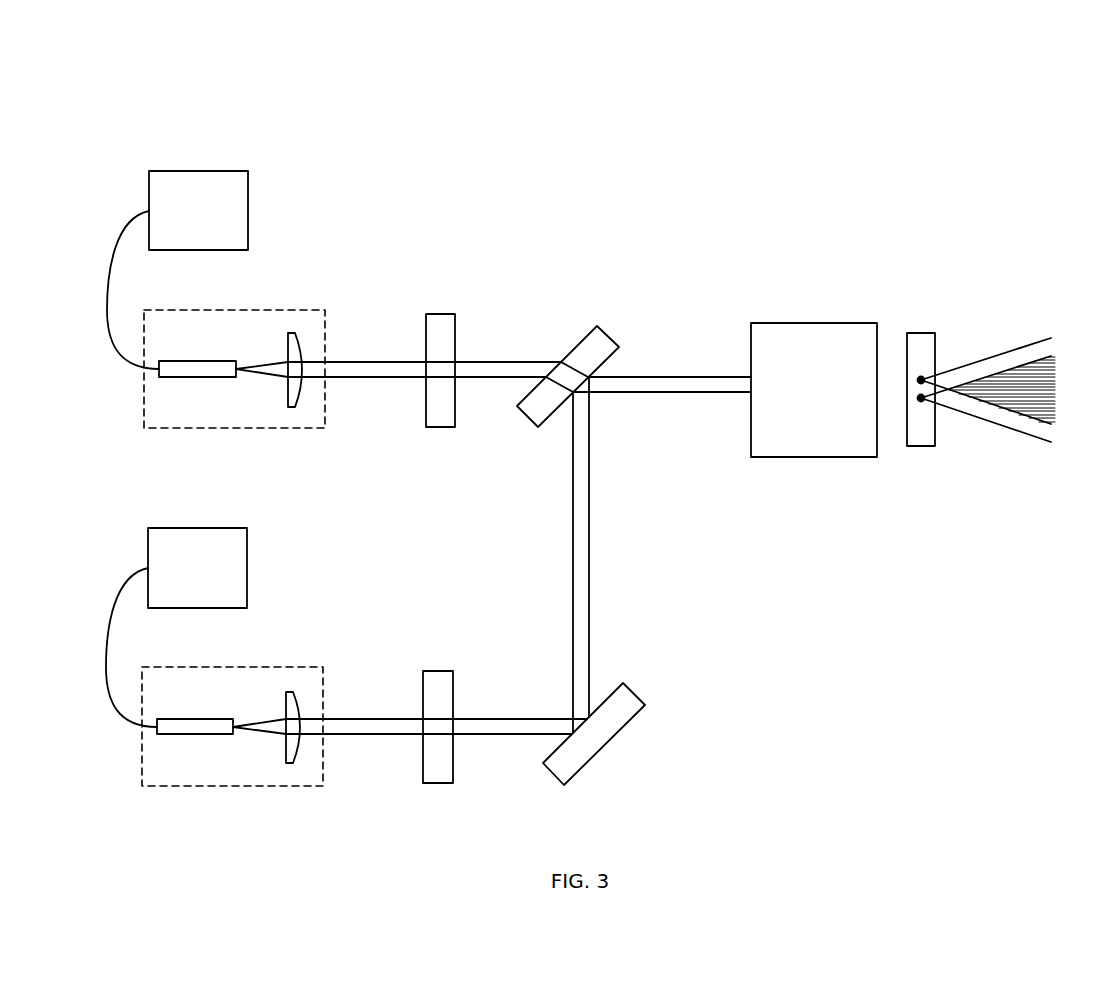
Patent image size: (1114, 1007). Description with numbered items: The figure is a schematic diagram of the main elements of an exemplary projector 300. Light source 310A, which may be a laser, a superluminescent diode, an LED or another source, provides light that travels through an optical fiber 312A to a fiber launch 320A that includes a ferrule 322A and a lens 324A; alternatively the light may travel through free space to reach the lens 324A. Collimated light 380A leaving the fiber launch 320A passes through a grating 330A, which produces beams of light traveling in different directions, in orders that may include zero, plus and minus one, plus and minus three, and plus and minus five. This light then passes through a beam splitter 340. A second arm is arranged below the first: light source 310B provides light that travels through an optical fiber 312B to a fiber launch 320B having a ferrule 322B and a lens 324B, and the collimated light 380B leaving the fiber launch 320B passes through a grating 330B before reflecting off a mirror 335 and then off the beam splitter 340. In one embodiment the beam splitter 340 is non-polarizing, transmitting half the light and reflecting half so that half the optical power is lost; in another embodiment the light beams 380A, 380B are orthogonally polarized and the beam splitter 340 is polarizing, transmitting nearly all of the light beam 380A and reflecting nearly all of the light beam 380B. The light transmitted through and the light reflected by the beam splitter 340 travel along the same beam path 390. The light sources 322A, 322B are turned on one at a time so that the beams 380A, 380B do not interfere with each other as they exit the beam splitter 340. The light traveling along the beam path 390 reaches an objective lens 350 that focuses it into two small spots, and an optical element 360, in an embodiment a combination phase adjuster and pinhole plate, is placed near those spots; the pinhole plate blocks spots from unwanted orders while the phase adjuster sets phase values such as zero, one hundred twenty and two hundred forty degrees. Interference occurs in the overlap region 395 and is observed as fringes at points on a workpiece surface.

The projector 300 is at (387, 87).
The light source 310A is at (160, 170).
The light source 310B is at (212, 527).
The optical fiber 312A is at (108, 288).
The optical fiber 312B is at (107, 647).
The fiber launch 320A is at (319, 239).
The fiber launch 320B is at (334, 602).
The ferrule 322A is at (198, 377).
The ferrule 322B is at (196, 734).
The lens 324A is at (305, 395).
The lens 324B is at (303, 752).
The grating 330A is at (435, 427).
The grating 330B is at (433, 783).
The mirror 335 is at (553, 773).
The beam splitter 340 is at (527, 415).
The objective lens 350 is at (817, 323).
The optical element 360 is at (921, 447).
The collimated light 380A is at (387, 362).
The collimated light 380B is at (387, 719).
The beam path 390 is at (679, 377).
The overlap region 395 is at (1022, 395).